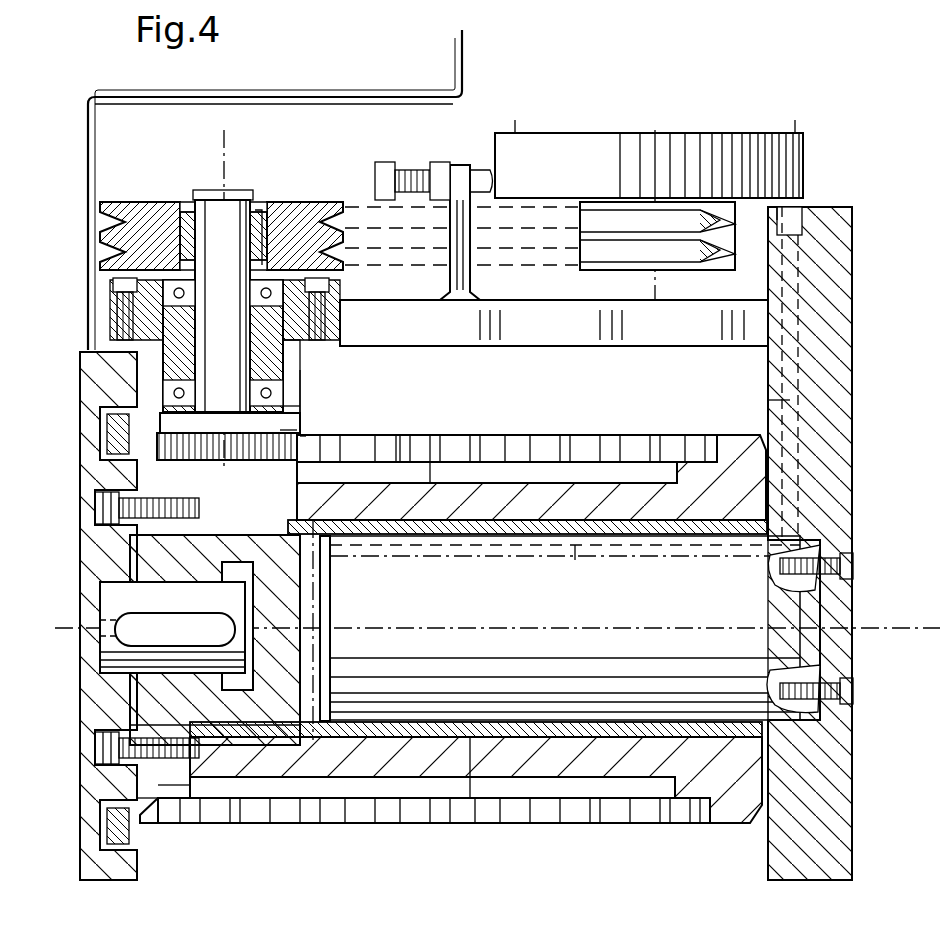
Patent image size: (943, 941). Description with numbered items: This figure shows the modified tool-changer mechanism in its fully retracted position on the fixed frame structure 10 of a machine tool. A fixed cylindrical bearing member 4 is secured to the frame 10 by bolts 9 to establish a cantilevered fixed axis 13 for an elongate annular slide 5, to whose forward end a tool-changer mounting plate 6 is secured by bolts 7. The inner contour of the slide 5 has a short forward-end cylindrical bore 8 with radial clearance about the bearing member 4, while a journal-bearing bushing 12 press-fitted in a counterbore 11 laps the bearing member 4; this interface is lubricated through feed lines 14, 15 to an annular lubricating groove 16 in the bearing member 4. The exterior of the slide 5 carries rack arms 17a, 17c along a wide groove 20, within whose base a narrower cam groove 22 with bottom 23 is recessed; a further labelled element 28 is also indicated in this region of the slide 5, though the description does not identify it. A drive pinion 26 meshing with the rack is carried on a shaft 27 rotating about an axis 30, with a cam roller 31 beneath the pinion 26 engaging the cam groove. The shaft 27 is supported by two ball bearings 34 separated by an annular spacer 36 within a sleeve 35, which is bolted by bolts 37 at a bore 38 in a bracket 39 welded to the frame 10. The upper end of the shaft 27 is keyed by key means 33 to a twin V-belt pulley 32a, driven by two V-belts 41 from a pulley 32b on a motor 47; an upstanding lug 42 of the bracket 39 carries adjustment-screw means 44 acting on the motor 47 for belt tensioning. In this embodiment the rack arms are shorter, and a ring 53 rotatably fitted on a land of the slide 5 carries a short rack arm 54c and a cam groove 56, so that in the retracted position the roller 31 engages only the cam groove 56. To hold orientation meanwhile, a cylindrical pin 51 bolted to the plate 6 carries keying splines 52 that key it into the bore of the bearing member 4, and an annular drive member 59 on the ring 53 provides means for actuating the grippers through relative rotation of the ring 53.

The fixed cylindrical bearing member 4 is at (270, 599).
The elongate annular slide 5 is at (742, 480).
The tool-changer mounting plate 6 is at (108, 882).
The bolts 7 is at (152, 575).
The forward-end cylindrical bore 8 is at (255, 660).
The bolts 9 is at (790, 600).
The frame structure 10 is at (828, 215).
The cylindrical counterbore 11 is at (470, 790).
The journal-bearing bushing 12 is at (530, 737).
The fixed axis 13 is at (455, 635).
The lubricant feed line 14 is at (565, 565).
The lubricant feed line 15 is at (770, 403).
The annular lubricating groove 16 is at (330, 615).
The first rack arm 17a is at (540, 435).
The second rack arm 17c is at (522, 823).
The groove 20 is at (396, 440).
The cam groove 22 is at (478, 488).
The cam groove bottom 23 is at (432, 470).
The drive pinion 26 is at (290, 430).
The shaft 27 is at (246, 210).
The ring 28 is at (300, 436).
The rotary axis 30 is at (224, 143).
The cam roller 31 is at (300, 470).
The twin V-belt pulley 32a is at (330, 202).
The twin V-belt pulley 32b is at (610, 270).
The key means 33 is at (262, 205).
The ball bearings 34 is at (305, 382).
The sleeve 35 is at (286, 372).
The annular spacer 36 is at (302, 362).
The bolts 37 is at (160, 325).
The cylindrical bore 38 is at (225, 300).
The bracket 39 is at (590, 327).
The V-belts 41 is at (185, 640).
The upstanding lug 42 is at (470, 280).
The adjustment-screw means 44 is at (410, 175).
The motor 47 is at (692, 150).
The cylindrical pin 51 is at (128, 611).
The keying spline 52 is at (200, 625).
The ring 53 is at (182, 830).
The short rack arm 54c is at (260, 812).
The cam groove 56 is at (222, 810).
The annular drive member 59 is at (145, 825).